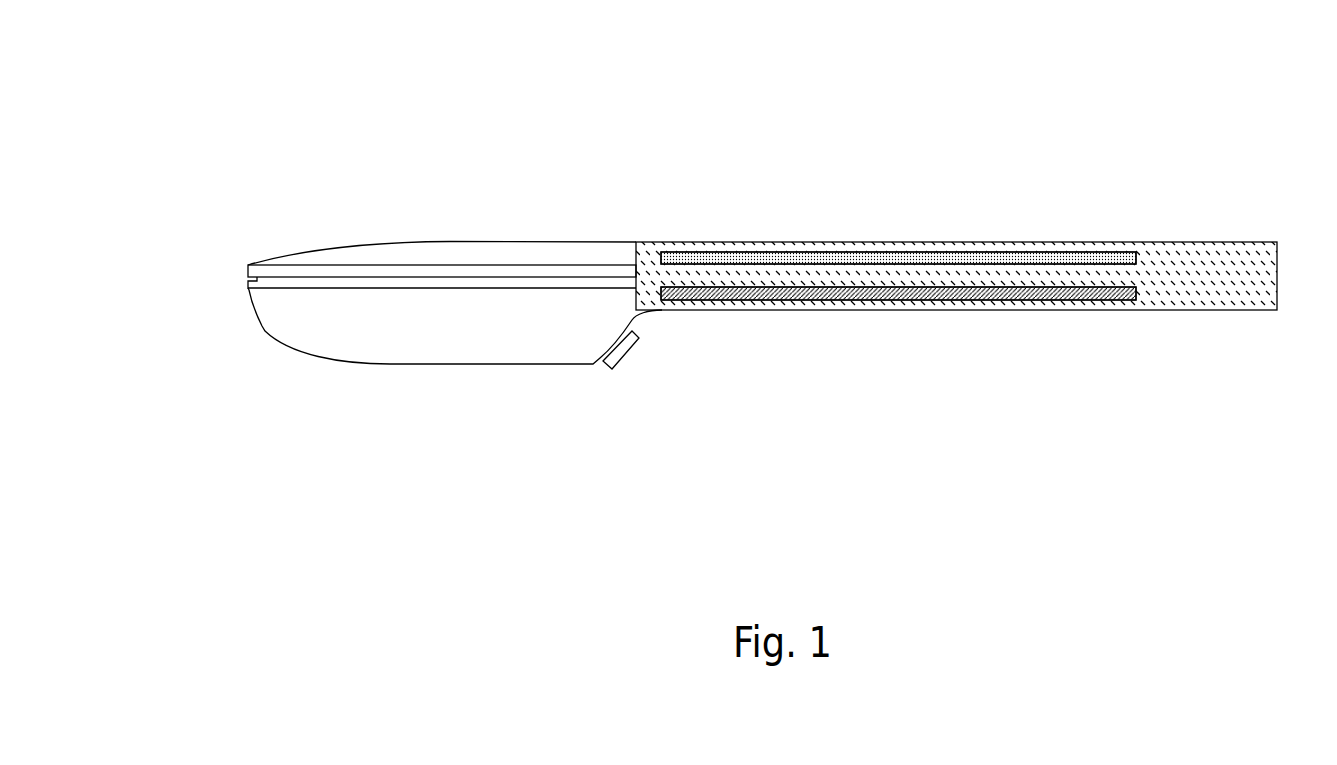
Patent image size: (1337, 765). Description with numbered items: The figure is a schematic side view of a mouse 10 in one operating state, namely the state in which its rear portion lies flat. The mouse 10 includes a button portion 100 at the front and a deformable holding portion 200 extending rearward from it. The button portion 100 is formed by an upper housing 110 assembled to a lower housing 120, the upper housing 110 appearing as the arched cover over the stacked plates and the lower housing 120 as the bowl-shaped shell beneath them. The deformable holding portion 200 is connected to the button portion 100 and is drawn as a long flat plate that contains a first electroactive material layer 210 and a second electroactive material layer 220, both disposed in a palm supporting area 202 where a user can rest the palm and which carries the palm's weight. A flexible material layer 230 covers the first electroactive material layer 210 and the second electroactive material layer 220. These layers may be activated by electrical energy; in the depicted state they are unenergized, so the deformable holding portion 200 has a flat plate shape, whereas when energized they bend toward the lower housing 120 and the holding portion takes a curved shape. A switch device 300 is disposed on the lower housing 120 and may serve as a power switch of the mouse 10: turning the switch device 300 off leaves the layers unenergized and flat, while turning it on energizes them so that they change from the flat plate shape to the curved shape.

The mouse 10 is at (245, 53).
The button portion 100 is at (165, 225).
The upper housing 110 is at (298, 262).
The lower housing 120 is at (260, 299).
The deformable holding portion 200 is at (1212, 150).
The palm supporting area 202 is at (1182, 243).
The first electroactive material layer 210 is at (1033, 262).
The second electroactive material layer 220 is at (1110, 297).
The flexible material layer 230 is at (928, 251).
The switch device 300 is at (609, 363).